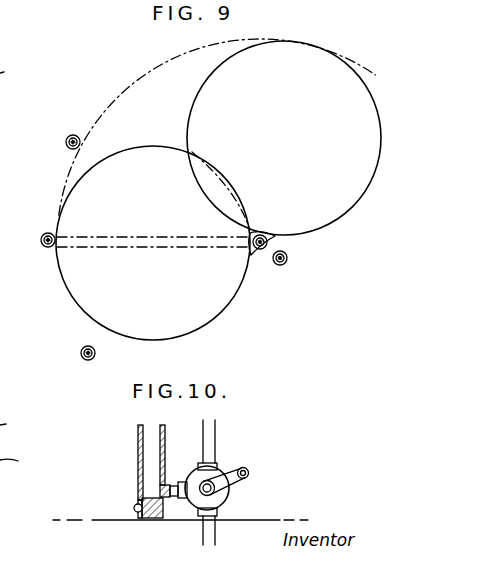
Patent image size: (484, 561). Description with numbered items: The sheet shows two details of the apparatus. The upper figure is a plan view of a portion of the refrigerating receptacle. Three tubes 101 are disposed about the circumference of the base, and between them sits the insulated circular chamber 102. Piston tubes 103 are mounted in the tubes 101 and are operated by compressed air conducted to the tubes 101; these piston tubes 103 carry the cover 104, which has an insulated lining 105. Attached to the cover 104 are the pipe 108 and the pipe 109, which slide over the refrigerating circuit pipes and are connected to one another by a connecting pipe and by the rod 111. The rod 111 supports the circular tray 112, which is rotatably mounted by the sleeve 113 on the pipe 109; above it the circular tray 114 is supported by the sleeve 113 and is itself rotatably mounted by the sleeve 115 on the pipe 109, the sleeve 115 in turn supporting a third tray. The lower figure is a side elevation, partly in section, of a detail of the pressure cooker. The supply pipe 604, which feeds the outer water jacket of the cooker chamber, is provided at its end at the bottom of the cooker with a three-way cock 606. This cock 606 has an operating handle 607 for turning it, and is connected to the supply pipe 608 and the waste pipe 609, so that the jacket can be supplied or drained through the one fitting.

In FIG. 9, the tubes 101 is at (71, 135).
In FIG. 10, the insulated circular chamber 102 is at (27, 463).
In FIG. 9, the piston tubes 103 is at (63, 138).
In FIG. 9, the cover 104 is at (17, 73).
In FIG. 9, the insulated lining 105 is at (8, 107).
In FIG. 9, the pipe 108 is at (44, 248).
In FIG. 9, the pipe 109 is at (261, 254).
In FIG. 9, the rod 111 is at (149, 250).
In FIG. 10, the rod 111 is at (20, 418).
In FIG. 9, the circular tray 112 is at (225, 310).
In FIG. 9, the sleeve 113 is at (250, 250).
In FIG. 9, the circular tray 114 is at (351, 207).
In FIG. 9, the sleeve 115 is at (265, 236).
In FIG. 10, the supply pipe 604 is at (148, 441).
In FIG. 10, the three-way cock 606 is at (232, 497).
In FIG. 10, the operating handle 607 is at (249, 470).
In FIG. 10, the supply pipe 608 is at (215, 442).
In FIG. 10, the waste pipe 609 is at (203, 533).